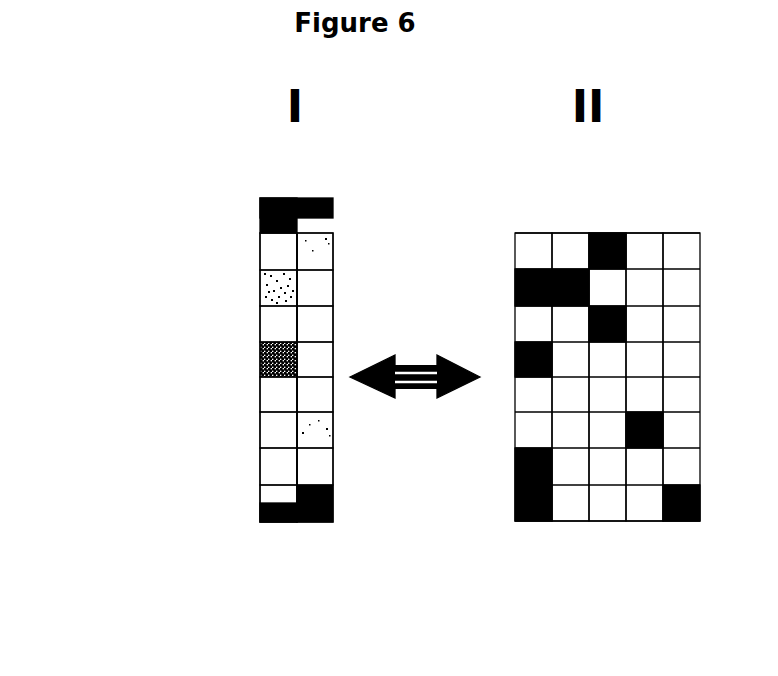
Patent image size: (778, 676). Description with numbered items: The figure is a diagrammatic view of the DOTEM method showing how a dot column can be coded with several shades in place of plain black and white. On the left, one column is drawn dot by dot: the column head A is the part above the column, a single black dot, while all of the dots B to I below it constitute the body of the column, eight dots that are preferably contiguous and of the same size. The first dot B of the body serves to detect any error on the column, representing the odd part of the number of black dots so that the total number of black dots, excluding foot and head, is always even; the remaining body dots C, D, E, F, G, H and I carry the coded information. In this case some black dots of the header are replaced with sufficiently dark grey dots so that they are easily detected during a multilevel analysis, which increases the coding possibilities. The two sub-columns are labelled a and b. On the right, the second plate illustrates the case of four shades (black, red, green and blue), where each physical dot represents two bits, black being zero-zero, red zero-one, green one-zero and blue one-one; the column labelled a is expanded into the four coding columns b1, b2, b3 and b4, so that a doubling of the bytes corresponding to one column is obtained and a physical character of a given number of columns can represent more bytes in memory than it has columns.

The column head A is at (236, 195).
The first dot of the body B is at (246, 253).
The body dot C is at (259, 288).
The body dot D is at (246, 323).
The body dot E is at (259, 359).
The body dot F is at (246, 395).
The body dot G is at (259, 431).
The body dot H is at (246, 467).
The body dot I is at (259, 503).
The column a is at (278, 552).
The column b is at (300, 566).
The column b1 is at (558, 566).
The column b2 is at (595, 566).
The column b3 is at (632, 566).
The column b4 is at (669, 566).